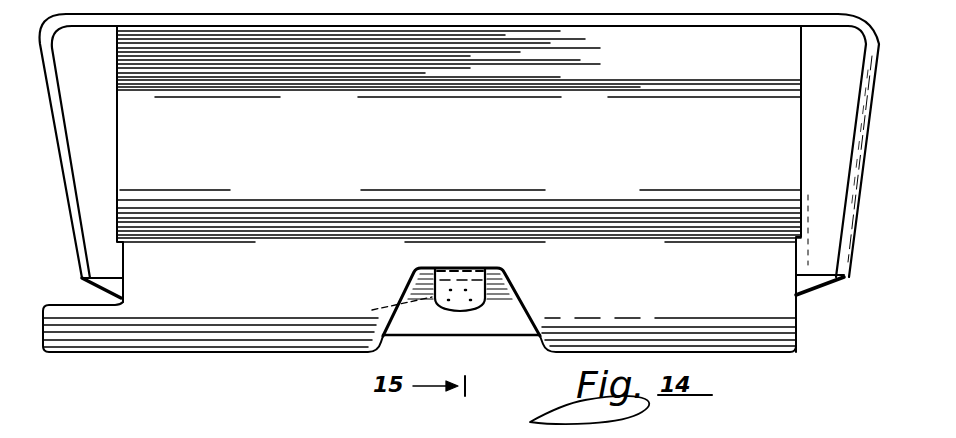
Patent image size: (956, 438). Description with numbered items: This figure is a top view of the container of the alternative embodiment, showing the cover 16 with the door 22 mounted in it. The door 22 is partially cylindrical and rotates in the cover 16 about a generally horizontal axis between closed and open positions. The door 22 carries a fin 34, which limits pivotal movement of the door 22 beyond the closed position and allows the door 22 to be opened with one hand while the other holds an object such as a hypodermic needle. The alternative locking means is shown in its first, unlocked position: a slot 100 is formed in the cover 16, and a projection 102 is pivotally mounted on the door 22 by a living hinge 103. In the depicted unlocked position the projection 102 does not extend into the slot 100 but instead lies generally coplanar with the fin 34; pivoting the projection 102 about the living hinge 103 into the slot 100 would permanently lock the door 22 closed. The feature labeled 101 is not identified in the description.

The cover 16 is at (66, 228).
The door 22 is at (462, 167).
The fin 34 is at (216, 337).
The slot 100 is at (432, 282).
The recess 101 is at (408, 298).
The projection 102 is at (487, 300).
The living hinge 103 is at (490, 267).